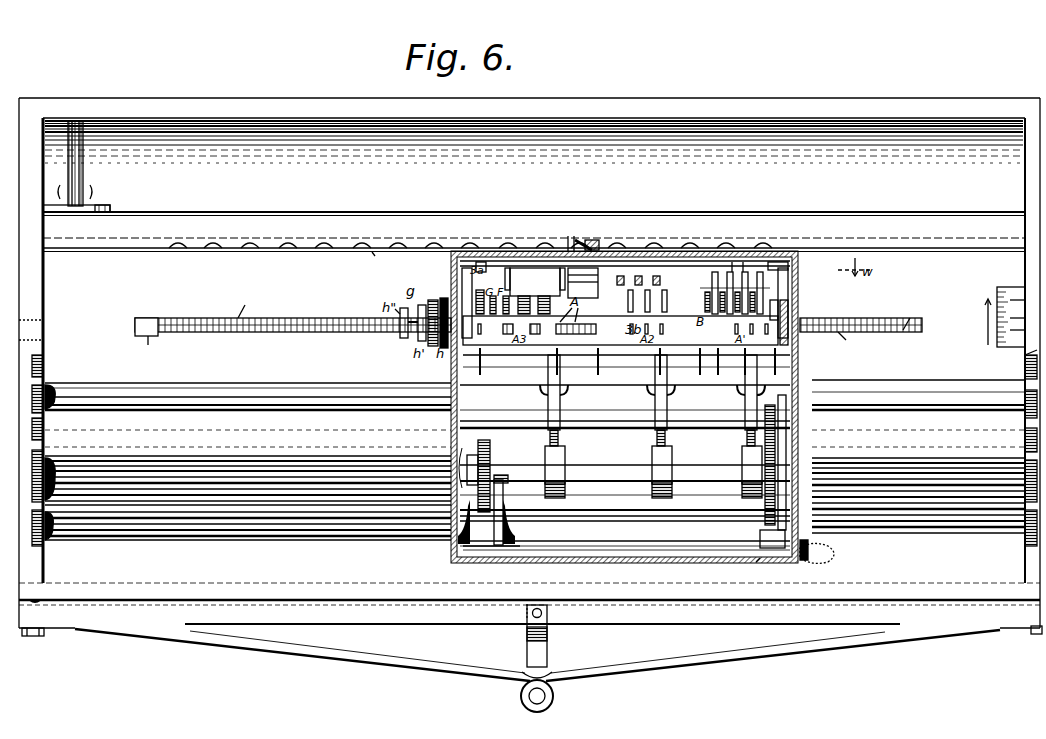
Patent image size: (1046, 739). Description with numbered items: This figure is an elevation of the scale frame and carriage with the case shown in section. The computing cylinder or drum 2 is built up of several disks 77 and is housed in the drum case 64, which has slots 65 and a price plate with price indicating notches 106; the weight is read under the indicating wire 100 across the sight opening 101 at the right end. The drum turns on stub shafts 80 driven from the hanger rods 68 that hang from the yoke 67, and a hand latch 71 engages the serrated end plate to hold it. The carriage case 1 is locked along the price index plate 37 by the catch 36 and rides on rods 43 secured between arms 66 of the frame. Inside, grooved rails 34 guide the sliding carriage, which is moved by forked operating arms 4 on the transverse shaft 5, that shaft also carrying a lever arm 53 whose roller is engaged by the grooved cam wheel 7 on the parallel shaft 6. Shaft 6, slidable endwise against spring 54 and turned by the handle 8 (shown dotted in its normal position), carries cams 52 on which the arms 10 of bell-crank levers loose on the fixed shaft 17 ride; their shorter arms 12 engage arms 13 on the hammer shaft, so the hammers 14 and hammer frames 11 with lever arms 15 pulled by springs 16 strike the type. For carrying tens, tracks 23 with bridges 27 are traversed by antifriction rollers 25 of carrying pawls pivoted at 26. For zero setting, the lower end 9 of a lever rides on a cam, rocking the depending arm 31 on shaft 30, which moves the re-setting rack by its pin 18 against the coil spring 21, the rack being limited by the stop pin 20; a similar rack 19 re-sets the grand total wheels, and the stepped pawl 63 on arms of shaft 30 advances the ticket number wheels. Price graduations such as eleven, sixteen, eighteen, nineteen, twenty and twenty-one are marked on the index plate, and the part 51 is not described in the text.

The carriage case 1 is at (756, 562).
The computing cylinder or drum 2 is at (523, 330).
The operating arm 4 is at (447, 440).
The transverse shaft 5 is at (645, 530).
The shaft 6 is at (624, 484).
The grooved cam wheel 7 is at (492, 435).
The operating handle 8 is at (556, 403).
The lower end of arm 17' 9 is at (806, 432).
The arm of bell-crank lever 10 is at (747, 441).
The hammer frame 11 is at (398, 236).
The shorter arm of bell-crank lever 12 is at (740, 400).
The arm 13 is at (745, 370).
The hammer 14 is at (762, 302).
The lever arm 15 is at (759, 302).
The spring 16 is at (580, 236).
The fixed shaft 17 is at (625, 367).
The pin 18 is at (654, 236).
The re-setting rack 19 is at (709, 275).
The stop pin 20 is at (726, 236).
The coil spring 21 is at (763, 236).
The track 23 is at (720, 299).
The antifriction roller 25 is at (732, 262).
The pivot 26 is at (632, 286).
The bridge 27 is at (640, 303).
The shaft 30 is at (308, 304).
The depending arm 31 is at (712, 281).
The grooved rails 34 is at (458, 280).
The catch 36 is at (563, 233).
The price index plate 37 is at (534, 232).
The rod 43 is at (186, 398).
The lever 51 is at (458, 468).
The cam 52 is at (565, 460).
The lever arm 53 is at (500, 478).
The spring 54 is at (470, 478).
The pawl 63 is at (535, 282).
The drum case 64 is at (170, 543).
The slots 65 is at (547, 322).
The arms 66 is at (44, 376).
The yoke 67 is at (440, 660).
The hanger rods 68 is at (45, 598).
The latch 71 is at (84, 182).
The disks 77 is at (310, 333).
The stub shaft 80 is at (1032, 352).
The indicating wire 100 is at (997, 340).
The sight opening 101 is at (988, 310).
The price indicating notch 106 is at (448, 261).